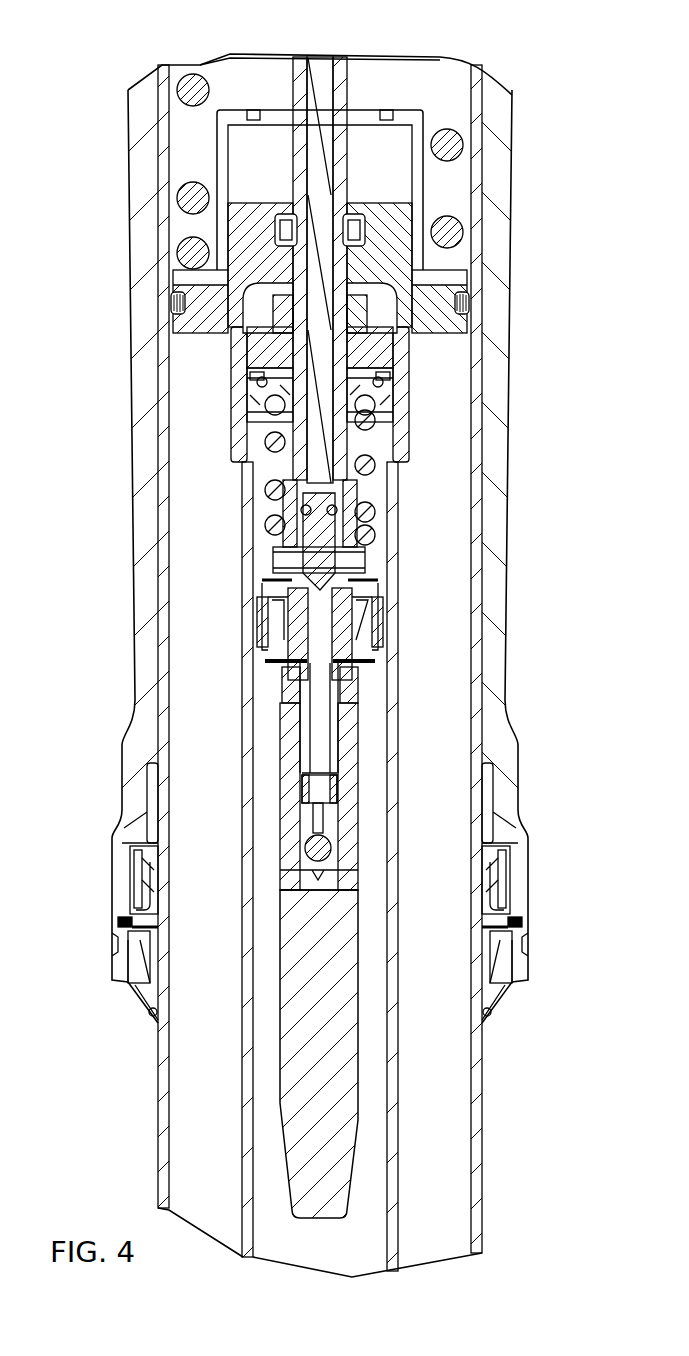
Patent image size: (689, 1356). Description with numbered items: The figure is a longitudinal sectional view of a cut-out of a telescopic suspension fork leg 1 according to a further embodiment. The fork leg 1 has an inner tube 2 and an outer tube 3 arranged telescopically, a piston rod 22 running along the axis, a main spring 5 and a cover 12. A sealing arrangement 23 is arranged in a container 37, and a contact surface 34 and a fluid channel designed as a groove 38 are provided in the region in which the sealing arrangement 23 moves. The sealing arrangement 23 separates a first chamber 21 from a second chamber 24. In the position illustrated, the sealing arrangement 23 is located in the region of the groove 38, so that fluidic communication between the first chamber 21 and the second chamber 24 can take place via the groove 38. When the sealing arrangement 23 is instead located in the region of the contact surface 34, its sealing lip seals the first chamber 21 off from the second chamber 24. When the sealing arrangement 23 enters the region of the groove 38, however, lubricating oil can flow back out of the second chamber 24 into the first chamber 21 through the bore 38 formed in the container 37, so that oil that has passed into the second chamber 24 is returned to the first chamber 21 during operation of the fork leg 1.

The telescopic suspension fork leg 1 is at (606, 53).
The inner tube 2 is at (480, 1087).
The outer tube 3 is at (497, 608).
The main spring 5 is at (448, 145).
The cover 12 is at (410, 113).
The first chamber 21 is at (188, 123).
The piston rod 22 is at (340, 63).
The sealing arrangement 23 is at (275, 232).
The second chamber 24 is at (450, 505).
The contact surface 34 is at (293, 160).
The container 37 is at (397, 240).
The groove 38 is at (280, 203).